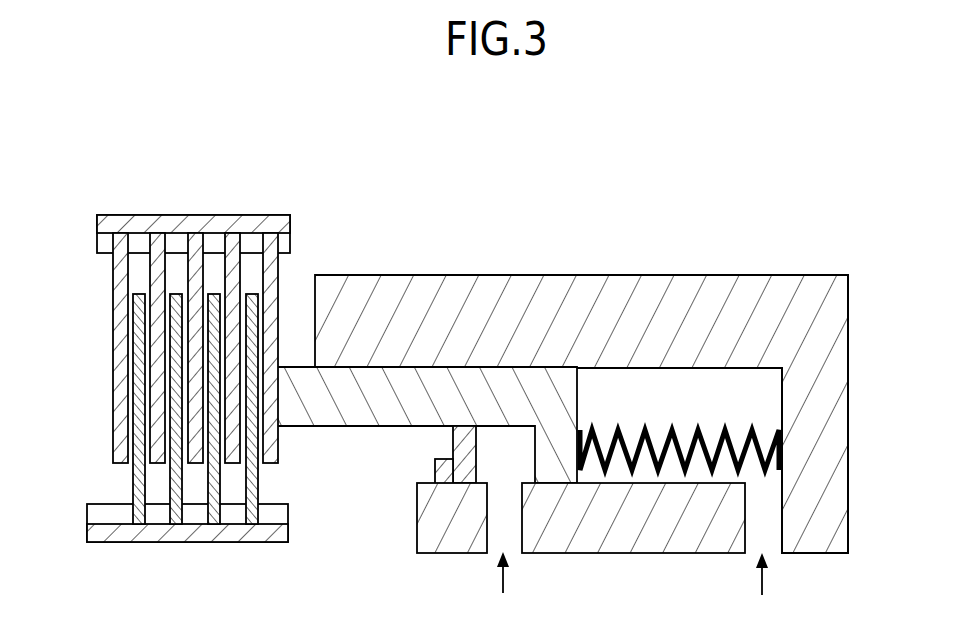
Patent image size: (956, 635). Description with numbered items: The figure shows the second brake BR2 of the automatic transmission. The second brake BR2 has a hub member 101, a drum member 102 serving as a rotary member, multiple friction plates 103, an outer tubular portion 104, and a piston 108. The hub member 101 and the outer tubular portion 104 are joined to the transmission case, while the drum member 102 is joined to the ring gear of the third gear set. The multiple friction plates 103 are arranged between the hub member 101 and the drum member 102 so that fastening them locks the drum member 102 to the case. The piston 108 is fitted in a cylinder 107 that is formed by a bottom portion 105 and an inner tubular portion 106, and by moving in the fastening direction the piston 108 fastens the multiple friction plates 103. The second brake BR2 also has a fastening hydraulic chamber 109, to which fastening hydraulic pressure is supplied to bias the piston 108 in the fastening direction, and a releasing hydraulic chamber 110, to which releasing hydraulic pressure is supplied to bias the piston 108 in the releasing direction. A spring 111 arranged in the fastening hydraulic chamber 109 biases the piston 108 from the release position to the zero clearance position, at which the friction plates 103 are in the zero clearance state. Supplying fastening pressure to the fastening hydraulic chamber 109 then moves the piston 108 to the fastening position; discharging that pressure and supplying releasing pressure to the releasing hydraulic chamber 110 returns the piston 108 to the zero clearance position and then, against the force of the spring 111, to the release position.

The hub member 101 is at (200, 542).
The drum member 102 is at (170, 222).
The friction plates 103 is at (110, 320).
The outer tubular portion 104 is at (600, 275).
The bottom portion 105 is at (812, 390).
The inner tubular portion 106 is at (650, 545).
The cylinder 107 is at (782, 417).
The piston 108 is at (362, 427).
The fastening hydraulic chamber 109 is at (703, 408).
The releasing hydraulic chamber 110 is at (527, 466).
The spring 111 is at (743, 463).
The second brake BR2 is at (852, 242).